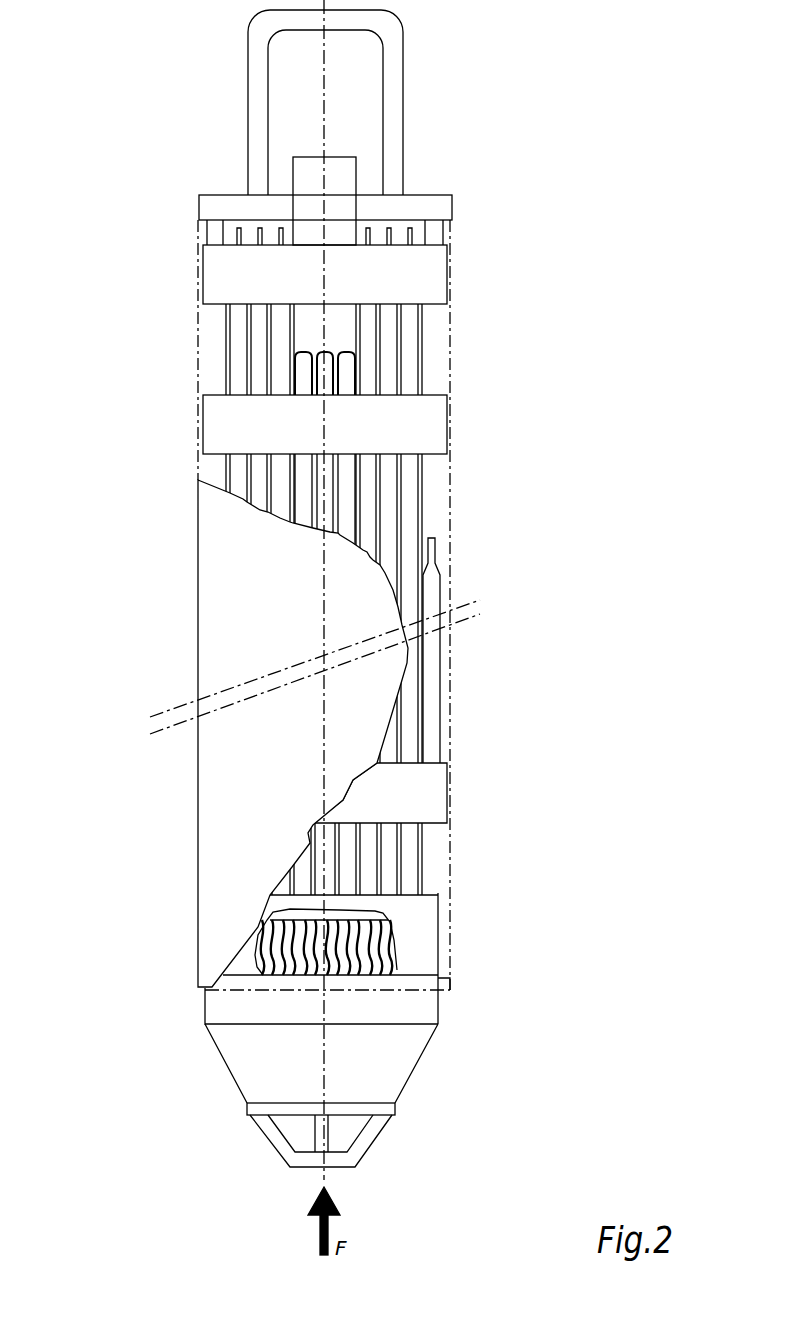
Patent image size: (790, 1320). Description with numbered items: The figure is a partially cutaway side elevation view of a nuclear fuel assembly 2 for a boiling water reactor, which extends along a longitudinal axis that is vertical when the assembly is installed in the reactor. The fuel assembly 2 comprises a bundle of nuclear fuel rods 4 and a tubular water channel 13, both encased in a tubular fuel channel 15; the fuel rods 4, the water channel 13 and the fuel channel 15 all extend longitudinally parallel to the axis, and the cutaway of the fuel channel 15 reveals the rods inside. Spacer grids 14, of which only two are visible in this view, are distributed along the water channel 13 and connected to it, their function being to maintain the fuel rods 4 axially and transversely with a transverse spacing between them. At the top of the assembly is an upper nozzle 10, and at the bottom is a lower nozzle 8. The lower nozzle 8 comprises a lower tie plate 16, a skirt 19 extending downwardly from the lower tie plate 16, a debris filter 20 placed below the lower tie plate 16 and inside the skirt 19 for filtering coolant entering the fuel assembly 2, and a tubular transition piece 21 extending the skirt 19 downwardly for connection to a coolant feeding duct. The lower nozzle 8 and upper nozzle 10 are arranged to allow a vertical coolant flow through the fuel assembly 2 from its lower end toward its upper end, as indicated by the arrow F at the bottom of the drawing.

The nuclear fuel assembly 2 is at (150, 193).
The nuclear fuel rods 4 is at (388, 368).
The lower nozzle 8 is at (468, 955).
The upper nozzle 10 is at (435, 280).
The water channel 13 is at (347, 340).
The spacer grids 14 is at (428, 422).
The fuel channel 15 is at (215, 552).
The lower tie plate 16 is at (373, 912).
The skirt 19 is at (417, 965).
The debris filter 20 is at (382, 942).
The transition piece 21 is at (392, 1065).